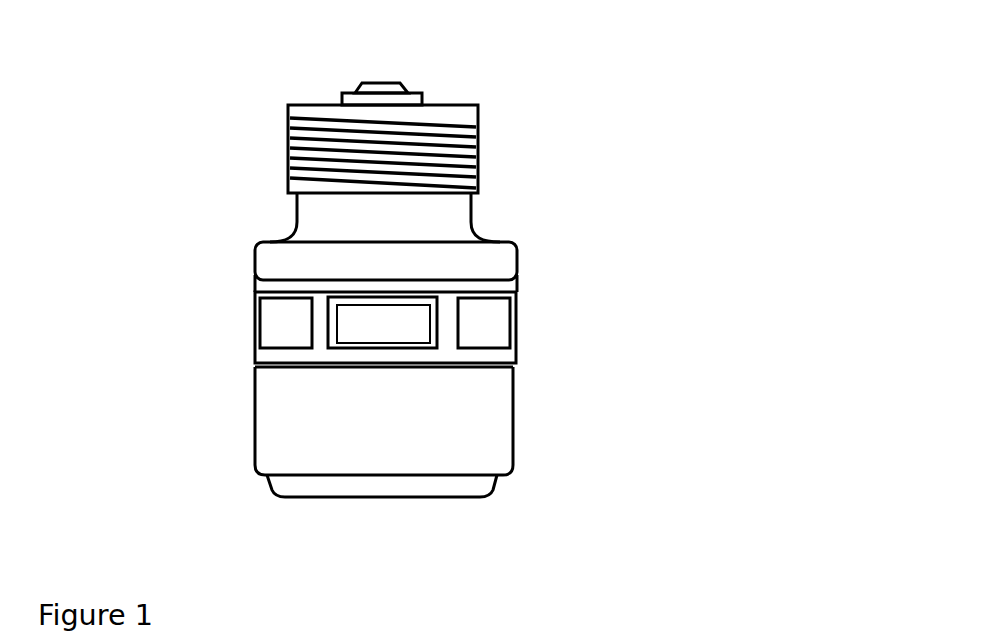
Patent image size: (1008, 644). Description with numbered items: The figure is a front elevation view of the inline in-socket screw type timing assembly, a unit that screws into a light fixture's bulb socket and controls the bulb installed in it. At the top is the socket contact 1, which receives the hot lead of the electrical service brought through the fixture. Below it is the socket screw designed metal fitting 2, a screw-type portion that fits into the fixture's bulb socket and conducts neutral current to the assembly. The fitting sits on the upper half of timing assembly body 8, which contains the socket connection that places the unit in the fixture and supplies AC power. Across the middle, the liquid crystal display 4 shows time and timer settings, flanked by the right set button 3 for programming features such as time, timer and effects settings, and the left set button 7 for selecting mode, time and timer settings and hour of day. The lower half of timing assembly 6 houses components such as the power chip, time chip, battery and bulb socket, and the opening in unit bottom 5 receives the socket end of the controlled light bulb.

The socket contact 1 is at (407, 72).
The socket screw designed metal fitting 2 is at (493, 152).
The right set button 3 is at (495, 318).
The liquid crystal display screen 4 is at (390, 320).
The opening in unit bottom 5 is at (390, 517).
The lower half of timing assembly body 6 is at (283, 412).
The left set button 7 is at (273, 322).
The upper half of timing assembly body 8 is at (272, 213).